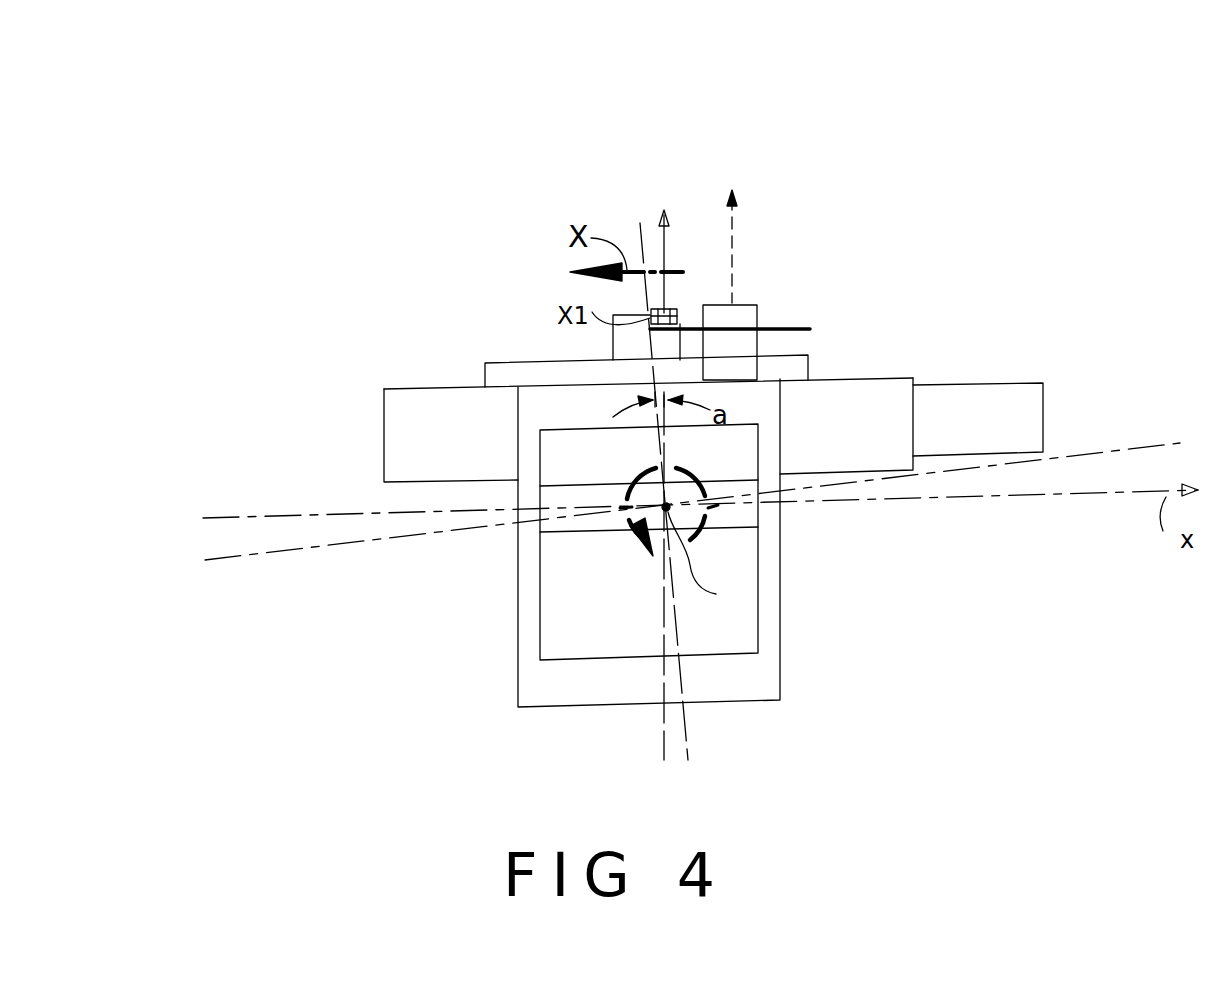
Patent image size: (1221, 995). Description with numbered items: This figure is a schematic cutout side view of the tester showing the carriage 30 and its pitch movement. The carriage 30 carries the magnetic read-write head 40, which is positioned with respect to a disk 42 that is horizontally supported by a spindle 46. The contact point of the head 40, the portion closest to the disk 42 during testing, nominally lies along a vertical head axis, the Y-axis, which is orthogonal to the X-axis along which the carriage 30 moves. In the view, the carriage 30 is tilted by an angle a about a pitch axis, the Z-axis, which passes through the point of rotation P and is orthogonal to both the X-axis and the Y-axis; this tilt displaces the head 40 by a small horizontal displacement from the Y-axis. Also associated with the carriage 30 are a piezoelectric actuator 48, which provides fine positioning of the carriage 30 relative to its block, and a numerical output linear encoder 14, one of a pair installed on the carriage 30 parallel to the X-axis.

The carriage 30 is at (448, 372).
The magnetic read-write head 40 is at (673, 310).
The disk 42 is at (798, 323).
The spindle 46 is at (745, 305).
The piezoelectric actuator 48 is at (990, 410).
The numerical output linear encoder 14 is at (733, 516).